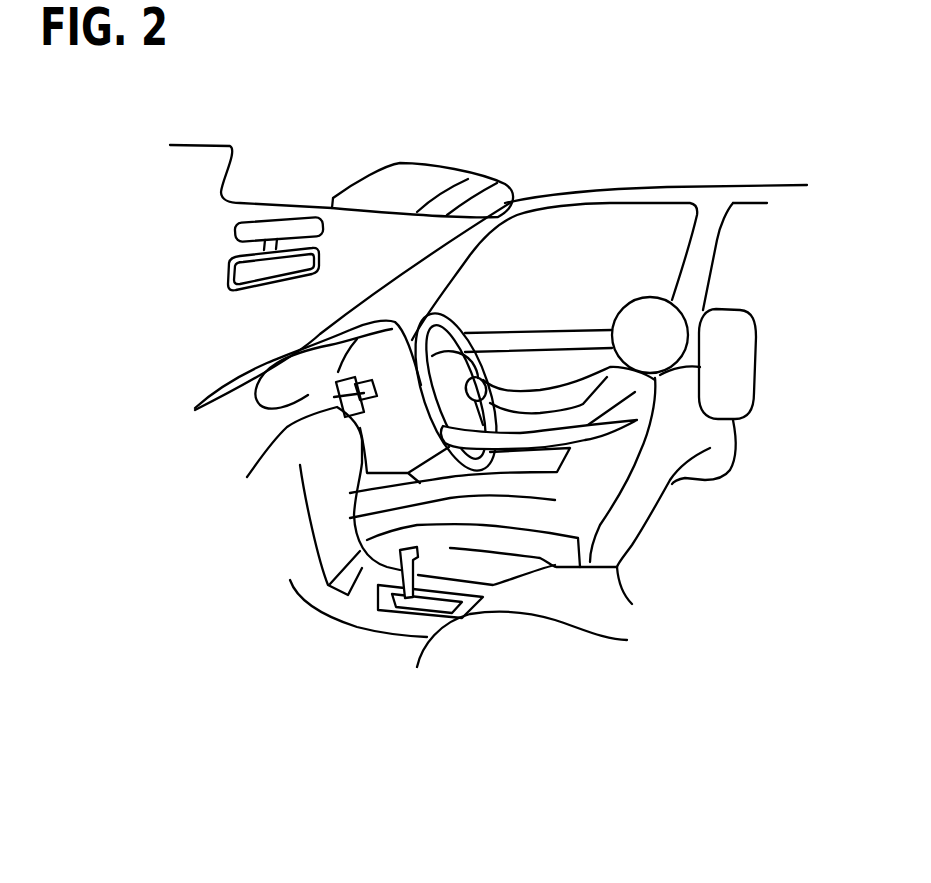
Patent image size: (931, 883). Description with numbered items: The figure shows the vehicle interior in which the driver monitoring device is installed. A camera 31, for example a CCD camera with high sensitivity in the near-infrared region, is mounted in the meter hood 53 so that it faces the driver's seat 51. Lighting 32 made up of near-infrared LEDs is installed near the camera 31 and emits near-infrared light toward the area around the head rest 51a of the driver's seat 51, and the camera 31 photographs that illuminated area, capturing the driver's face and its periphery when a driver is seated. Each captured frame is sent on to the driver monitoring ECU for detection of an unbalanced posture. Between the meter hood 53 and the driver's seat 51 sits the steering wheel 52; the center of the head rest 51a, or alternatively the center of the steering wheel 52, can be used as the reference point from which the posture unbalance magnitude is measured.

The camera 31 is at (282, 473).
The lighting 32 is at (247, 477).
The driver's seat 51 is at (767, 356).
The head rest 51a is at (738, 398).
The steering wheel 52 is at (453, 314).
The meter hood 53 is at (310, 365).